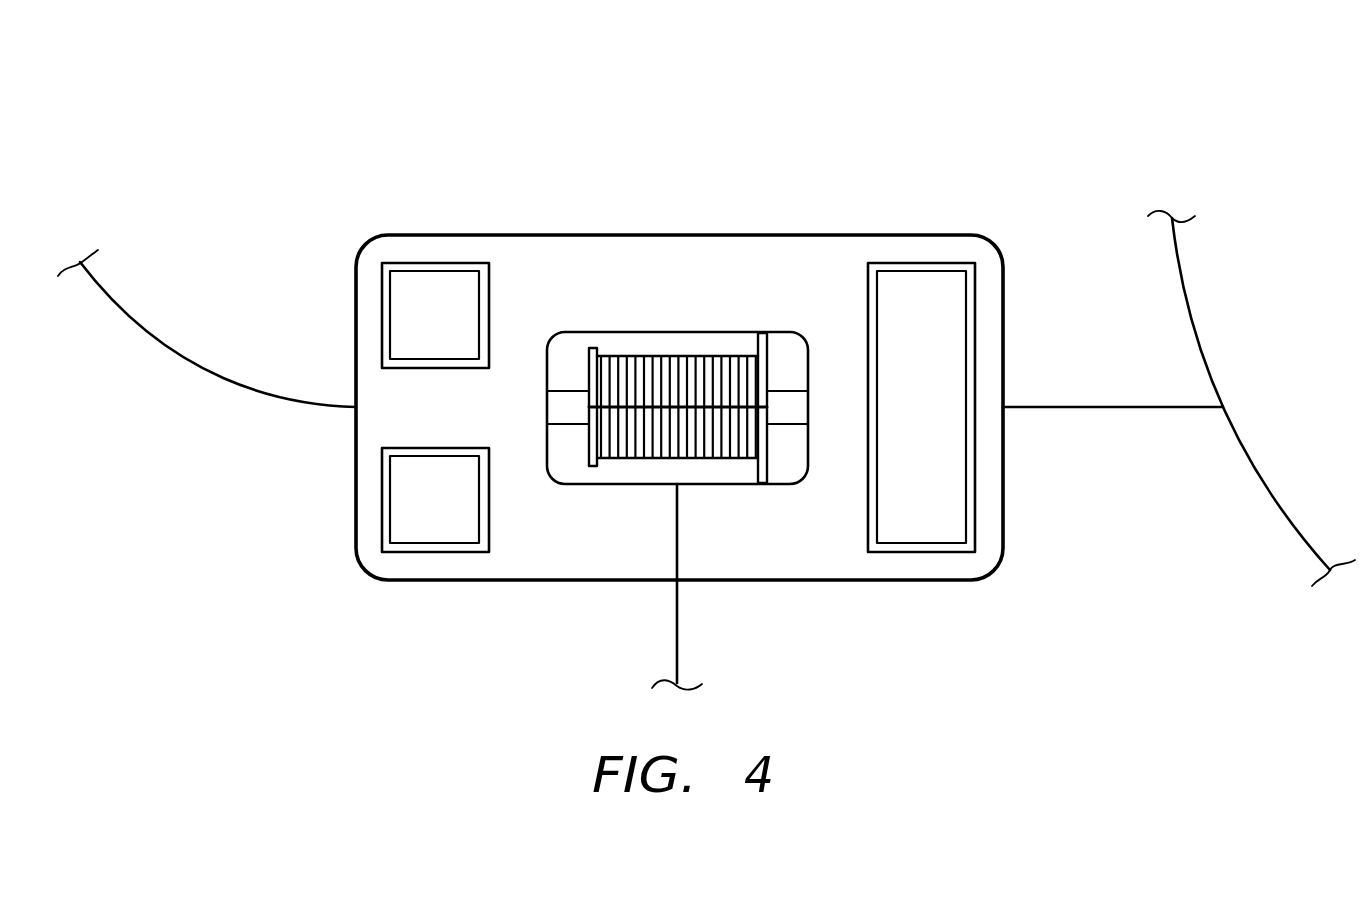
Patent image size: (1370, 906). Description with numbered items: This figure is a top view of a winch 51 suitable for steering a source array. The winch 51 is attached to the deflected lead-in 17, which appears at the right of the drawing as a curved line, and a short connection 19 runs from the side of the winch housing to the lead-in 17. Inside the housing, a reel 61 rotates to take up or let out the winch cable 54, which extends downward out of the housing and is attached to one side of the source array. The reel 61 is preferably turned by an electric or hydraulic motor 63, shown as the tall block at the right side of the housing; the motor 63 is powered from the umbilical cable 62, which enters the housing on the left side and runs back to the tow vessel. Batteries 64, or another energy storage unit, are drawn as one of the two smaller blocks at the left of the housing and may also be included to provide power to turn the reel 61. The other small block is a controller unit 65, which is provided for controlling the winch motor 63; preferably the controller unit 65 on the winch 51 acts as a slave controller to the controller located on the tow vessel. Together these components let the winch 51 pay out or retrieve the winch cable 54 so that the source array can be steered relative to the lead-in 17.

The winch 51 is at (915, 127).
The winch cable 54 is at (680, 652).
The reel 61 is at (589, 459).
The umbilical cable 62 is at (190, 365).
The motor 63 is at (930, 298).
The batteries 64 is at (437, 298).
The controller unit 65 is at (434, 523).
The wire 19 is at (1088, 410).
The deflected lead-in 17 is at (1197, 320).